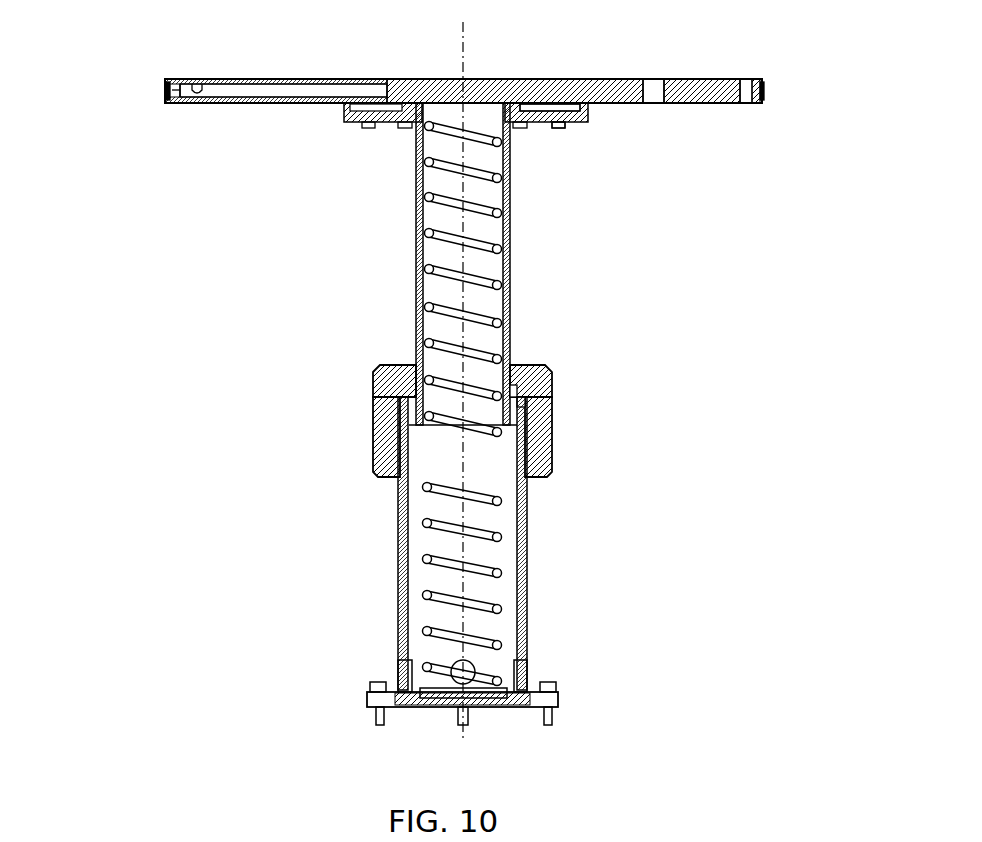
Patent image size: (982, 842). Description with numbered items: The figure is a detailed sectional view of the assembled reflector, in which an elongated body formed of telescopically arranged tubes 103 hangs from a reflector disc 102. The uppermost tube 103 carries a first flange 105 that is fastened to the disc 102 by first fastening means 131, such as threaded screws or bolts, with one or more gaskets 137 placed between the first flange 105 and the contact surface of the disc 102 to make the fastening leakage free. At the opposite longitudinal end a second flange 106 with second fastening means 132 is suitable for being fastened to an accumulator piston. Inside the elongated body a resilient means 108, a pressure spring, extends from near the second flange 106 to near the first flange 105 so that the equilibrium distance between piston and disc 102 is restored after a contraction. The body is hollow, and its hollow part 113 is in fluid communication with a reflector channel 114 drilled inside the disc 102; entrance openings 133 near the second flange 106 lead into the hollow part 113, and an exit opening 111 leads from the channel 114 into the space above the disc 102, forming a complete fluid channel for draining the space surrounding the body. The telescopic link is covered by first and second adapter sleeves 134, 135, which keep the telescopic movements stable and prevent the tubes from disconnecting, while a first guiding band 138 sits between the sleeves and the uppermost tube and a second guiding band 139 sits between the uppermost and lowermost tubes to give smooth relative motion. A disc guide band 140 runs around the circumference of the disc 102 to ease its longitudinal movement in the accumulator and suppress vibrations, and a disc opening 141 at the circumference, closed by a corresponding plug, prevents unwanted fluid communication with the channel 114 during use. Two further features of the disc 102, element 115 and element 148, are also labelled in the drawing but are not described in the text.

The reflector disc 102 is at (463, 79).
The elongated body tube 103 is at (483, 262).
The first flange 105 is at (590, 110).
The second flange 106 is at (558, 698).
The resilient means 108 is at (430, 305).
The exit opening 111 is at (199, 85).
The hollow part 113 is at (455, 509).
The reflector channel 114 is at (293, 90).
The plate opening 115 is at (655, 80).
The first fastening means 131 is at (565, 128).
The second fastening means 132 is at (375, 688).
The entrance opening 133 is at (400, 665).
The first adapter sleeve 134 is at (373, 432).
The second adapter sleeve 135 is at (553, 395).
The gasket 137 is at (365, 121).
The first guiding band 138 is at (520, 372).
The second guiding band 139 is at (513, 412).
The disc guide band 140 is at (764, 92).
The disc opening 141 is at (167, 98).
The plate end opening 148 is at (746, 80).